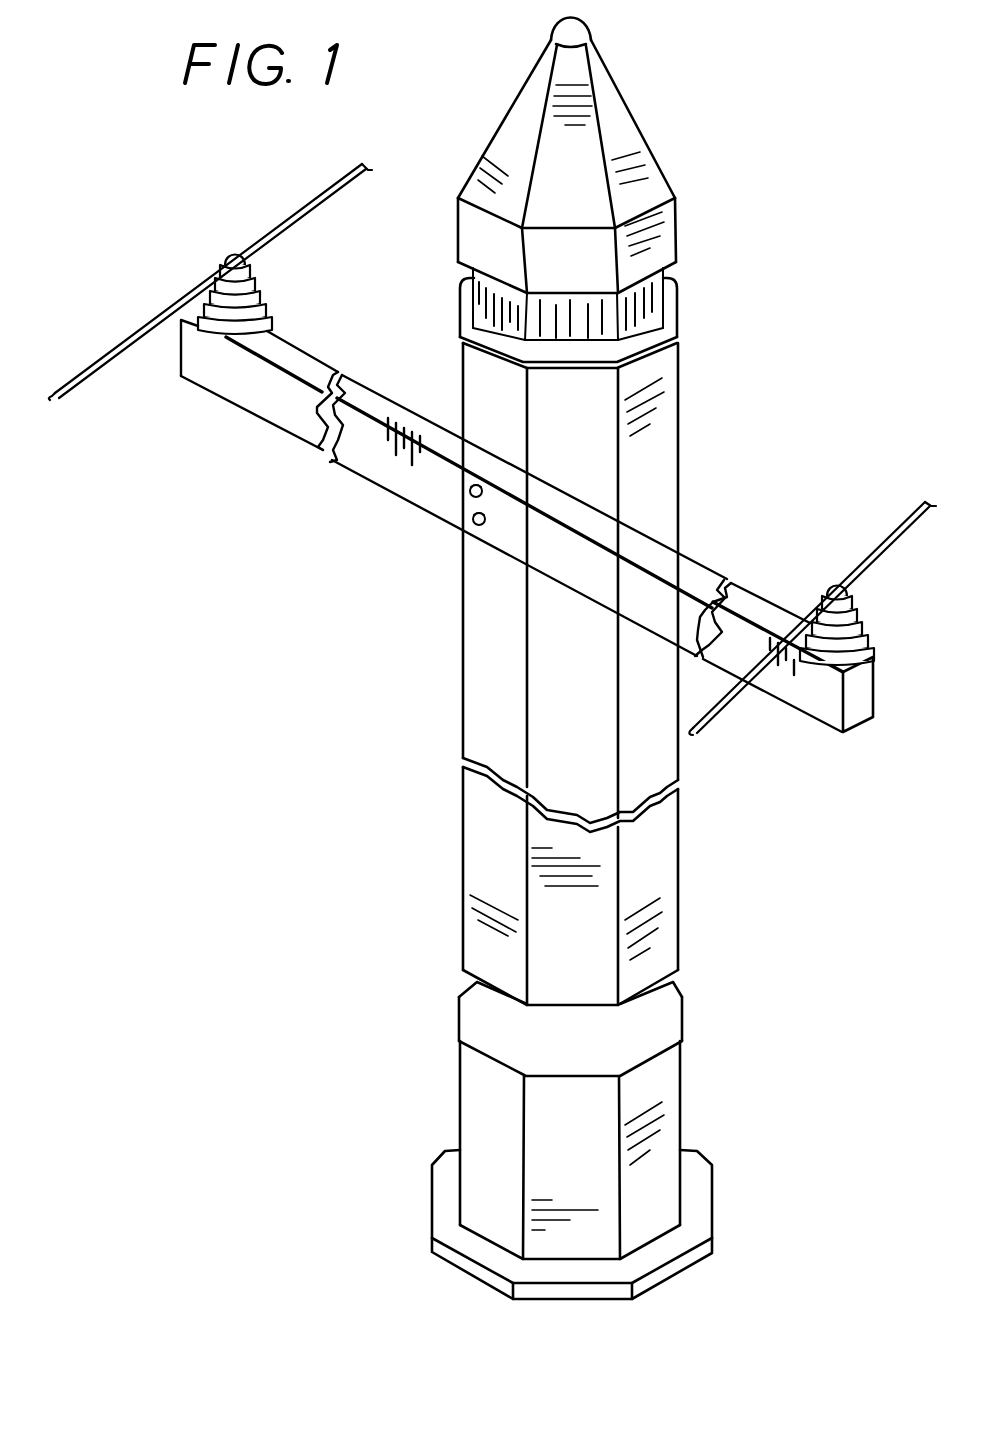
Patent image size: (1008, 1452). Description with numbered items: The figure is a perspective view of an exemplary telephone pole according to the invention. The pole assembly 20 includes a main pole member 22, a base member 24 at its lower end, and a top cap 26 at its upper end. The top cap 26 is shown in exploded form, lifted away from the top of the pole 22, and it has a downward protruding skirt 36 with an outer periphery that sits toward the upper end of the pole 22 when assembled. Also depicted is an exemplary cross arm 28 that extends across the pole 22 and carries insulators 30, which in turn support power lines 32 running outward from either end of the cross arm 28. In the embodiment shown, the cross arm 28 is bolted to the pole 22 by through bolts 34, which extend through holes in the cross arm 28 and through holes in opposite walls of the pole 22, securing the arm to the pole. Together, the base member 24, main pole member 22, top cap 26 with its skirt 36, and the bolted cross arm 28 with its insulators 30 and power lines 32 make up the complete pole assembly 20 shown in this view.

The pole assembly 20 is at (788, 240).
The main pole member 22 is at (683, 456).
The base member 24 is at (748, 1147).
The top cap 26 is at (653, 160).
The cross arm 28 is at (373, 443).
The insulators 30 is at (228, 277).
The power lines 32 is at (140, 326).
The through bolts 34 is at (467, 495).
The skirt 36 is at (677, 281).